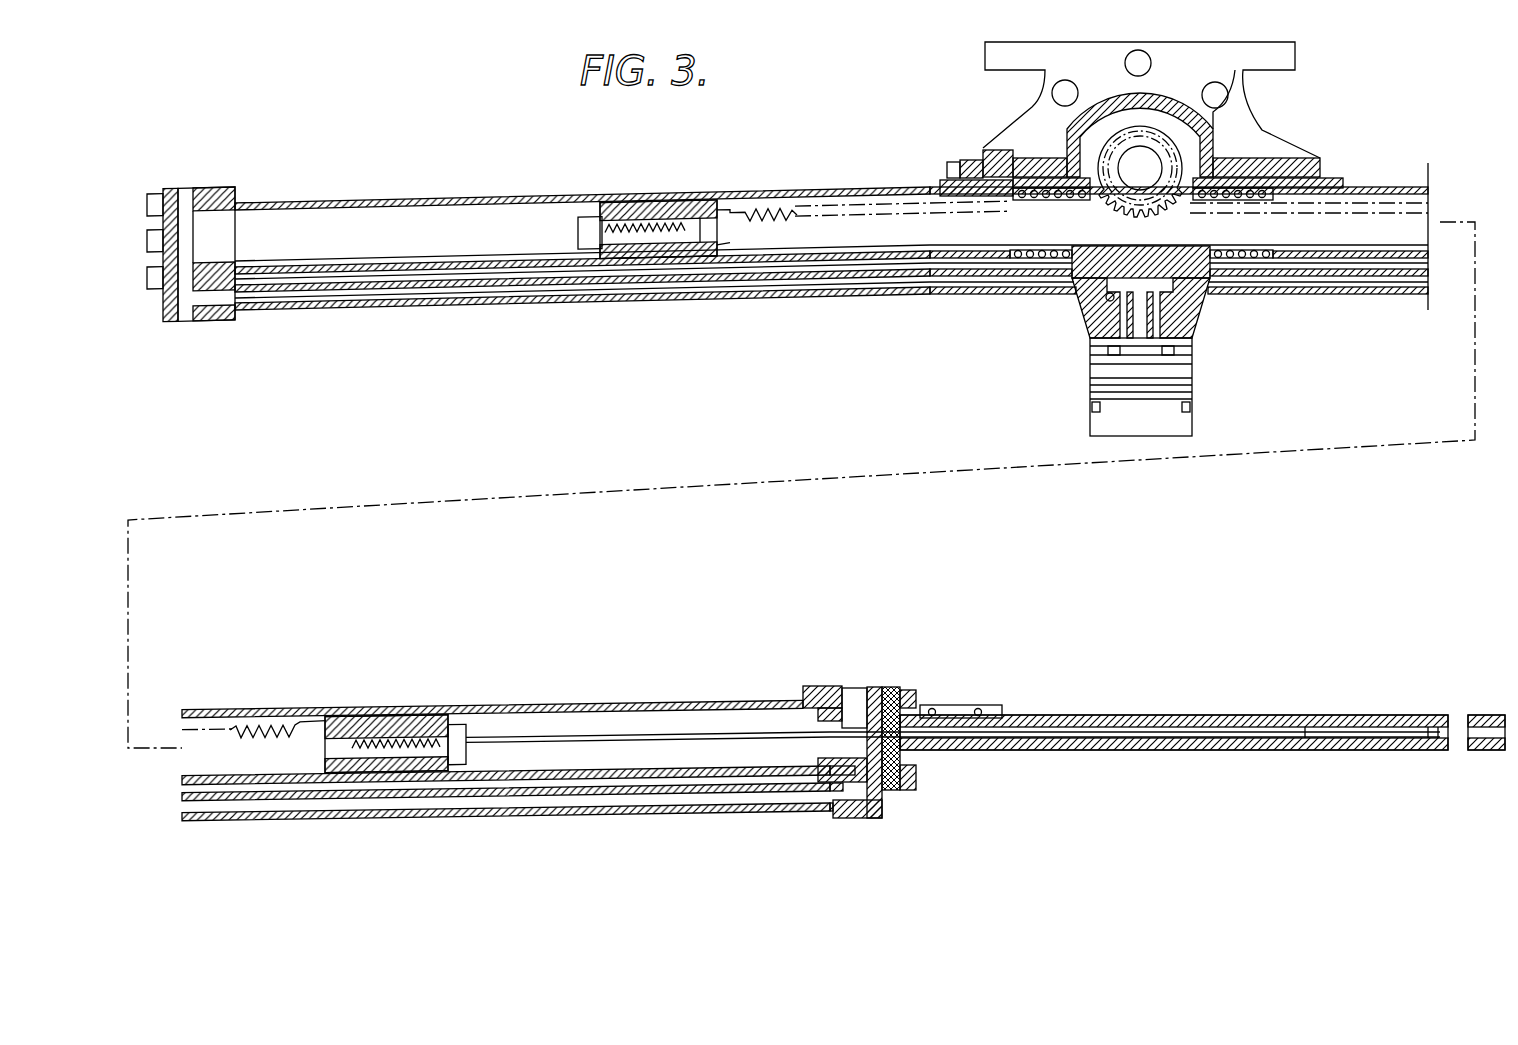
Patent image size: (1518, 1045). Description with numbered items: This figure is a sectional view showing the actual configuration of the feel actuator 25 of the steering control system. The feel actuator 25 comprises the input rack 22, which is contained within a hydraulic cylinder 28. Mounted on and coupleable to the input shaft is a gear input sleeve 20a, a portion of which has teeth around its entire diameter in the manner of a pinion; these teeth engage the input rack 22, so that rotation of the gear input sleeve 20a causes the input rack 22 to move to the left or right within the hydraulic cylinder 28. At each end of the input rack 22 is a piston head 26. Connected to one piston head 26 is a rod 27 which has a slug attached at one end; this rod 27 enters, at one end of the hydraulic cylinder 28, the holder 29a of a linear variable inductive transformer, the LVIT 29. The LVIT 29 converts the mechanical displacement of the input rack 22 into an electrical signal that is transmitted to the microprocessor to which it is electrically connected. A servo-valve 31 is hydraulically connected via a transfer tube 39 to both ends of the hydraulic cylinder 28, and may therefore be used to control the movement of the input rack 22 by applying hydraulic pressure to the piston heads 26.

The gear input sleeve 20a is at (1108, 175).
The input rack 22 is at (1082, 228).
The feel actuator 25 is at (1358, 148).
The piston head 26 is at (617, 203).
The rod 27 is at (552, 735).
The hydraulic cylinder 28 is at (633, 704).
The linear variable inductive transformer (LVIT) 29 is at (957, 757).
The holder 29a is at (1125, 752).
The servo-valve 31 is at (1090, 372).
The transfer tube 39 is at (620, 297).